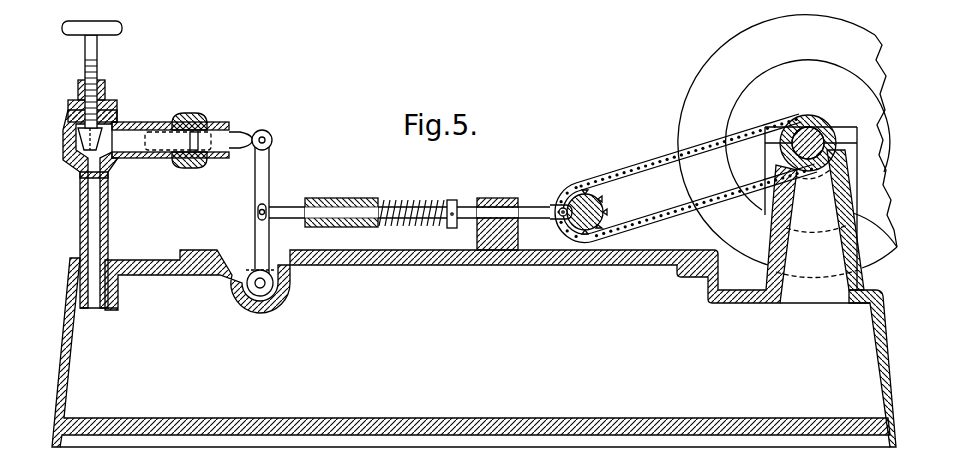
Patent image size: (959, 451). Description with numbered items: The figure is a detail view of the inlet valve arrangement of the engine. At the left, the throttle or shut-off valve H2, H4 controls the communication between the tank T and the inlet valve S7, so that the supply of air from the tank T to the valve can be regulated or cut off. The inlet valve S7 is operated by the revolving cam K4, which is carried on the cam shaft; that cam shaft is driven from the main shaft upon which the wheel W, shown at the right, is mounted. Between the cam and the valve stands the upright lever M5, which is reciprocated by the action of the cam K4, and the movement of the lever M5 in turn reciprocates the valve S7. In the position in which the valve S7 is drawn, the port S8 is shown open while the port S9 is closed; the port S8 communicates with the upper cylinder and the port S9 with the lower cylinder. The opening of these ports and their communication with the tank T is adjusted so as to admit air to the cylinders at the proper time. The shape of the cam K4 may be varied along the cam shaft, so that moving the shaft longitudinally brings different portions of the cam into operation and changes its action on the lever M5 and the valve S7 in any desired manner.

The throttle valve H2 is at (98, 74).
The throttle valve H4 is at (105, 143).
The port S8 is at (197, 119).
The inlet valve S7 is at (228, 135).
The port S9 is at (181, 166).
The upright lever M5 is at (243, 213).
The cam K4 is at (683, 178).
The wheel W is at (787, 152).
The tank T is at (474, 298).